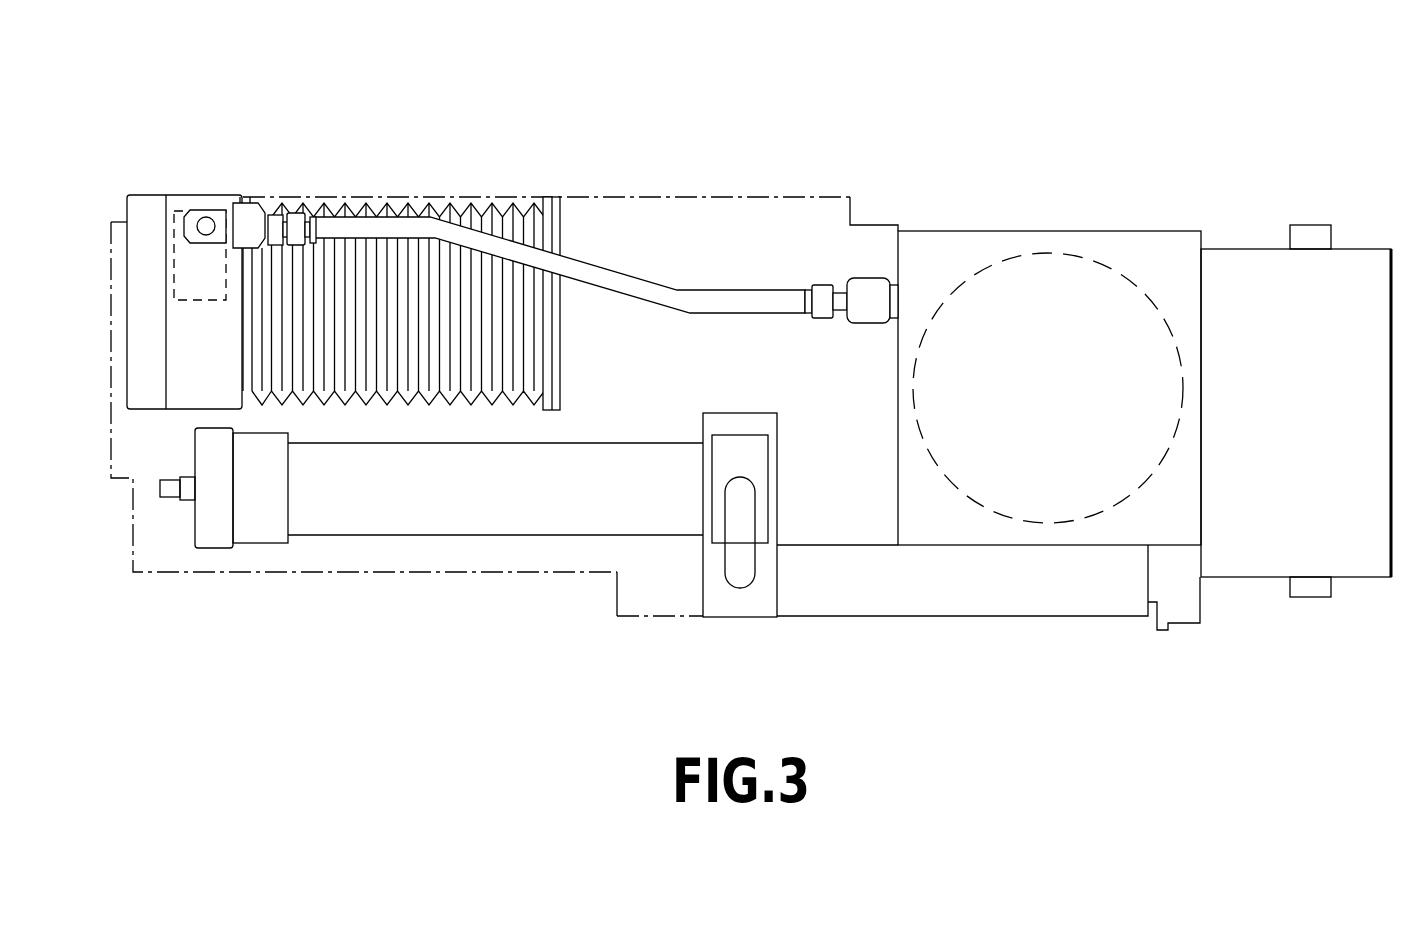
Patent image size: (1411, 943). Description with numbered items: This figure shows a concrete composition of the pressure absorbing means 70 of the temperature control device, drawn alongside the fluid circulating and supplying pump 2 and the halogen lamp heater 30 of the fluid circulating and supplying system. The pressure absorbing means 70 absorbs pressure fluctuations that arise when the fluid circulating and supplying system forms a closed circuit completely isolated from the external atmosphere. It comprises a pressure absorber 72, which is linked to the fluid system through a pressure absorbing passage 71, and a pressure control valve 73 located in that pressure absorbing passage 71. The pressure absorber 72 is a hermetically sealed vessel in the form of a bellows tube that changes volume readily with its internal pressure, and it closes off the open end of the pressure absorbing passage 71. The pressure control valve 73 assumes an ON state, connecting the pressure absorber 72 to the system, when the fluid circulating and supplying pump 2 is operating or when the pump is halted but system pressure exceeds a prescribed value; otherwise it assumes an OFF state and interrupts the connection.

The fluid circulating and supplying pump 2 is at (1080, 253).
The halogen lamp heater 30 is at (525, 510).
The pressure absorbing means 70 is at (512, 219).
The pressure absorbing passage 71 is at (642, 285).
The pressure absorber 72 is at (500, 207).
The pressure control valve 73 is at (172, 270).